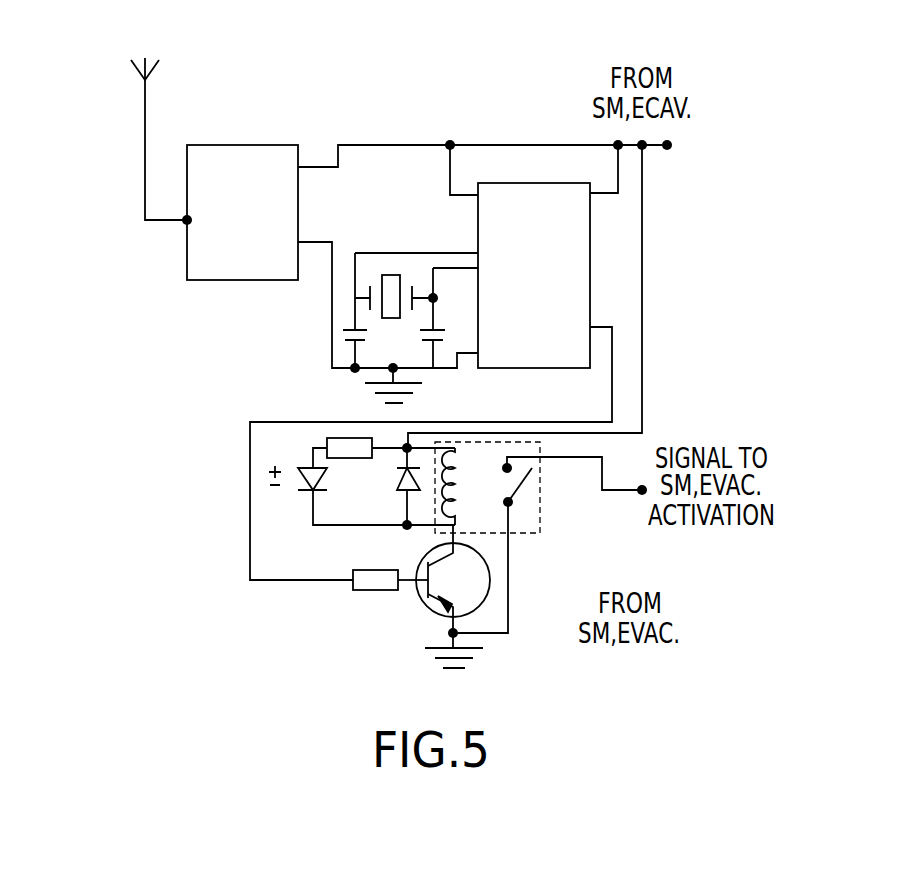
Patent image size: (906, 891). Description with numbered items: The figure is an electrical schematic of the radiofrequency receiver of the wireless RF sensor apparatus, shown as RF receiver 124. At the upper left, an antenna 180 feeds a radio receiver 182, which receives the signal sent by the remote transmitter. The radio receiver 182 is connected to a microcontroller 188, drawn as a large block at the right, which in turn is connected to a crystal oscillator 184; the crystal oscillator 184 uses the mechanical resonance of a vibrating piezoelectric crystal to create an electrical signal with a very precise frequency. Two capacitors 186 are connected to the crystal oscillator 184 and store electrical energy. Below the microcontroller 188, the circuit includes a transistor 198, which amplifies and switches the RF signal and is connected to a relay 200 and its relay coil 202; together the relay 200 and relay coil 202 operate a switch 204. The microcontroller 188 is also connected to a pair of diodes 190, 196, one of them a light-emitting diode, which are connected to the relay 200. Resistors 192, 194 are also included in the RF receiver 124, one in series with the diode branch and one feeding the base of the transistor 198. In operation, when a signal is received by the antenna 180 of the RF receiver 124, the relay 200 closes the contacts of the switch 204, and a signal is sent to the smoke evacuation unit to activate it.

The RF receiver 124 is at (533, 85).
The antenna 180 is at (133, 68).
The radio receiver 182 is at (233, 145).
The crystal oscillator 184 is at (395, 275).
The capacitors 186 is at (345, 331).
The microcontroller 188 is at (590, 253).
The diode 190 is at (300, 474).
The resistor 192 is at (355, 438).
The resistor 194 is at (362, 591).
The diode 196 is at (395, 482).
The transistor 198 is at (467, 595).
The relay 200 is at (533, 534).
The relay coil 202 is at (453, 467).
The switch 204 is at (520, 488).